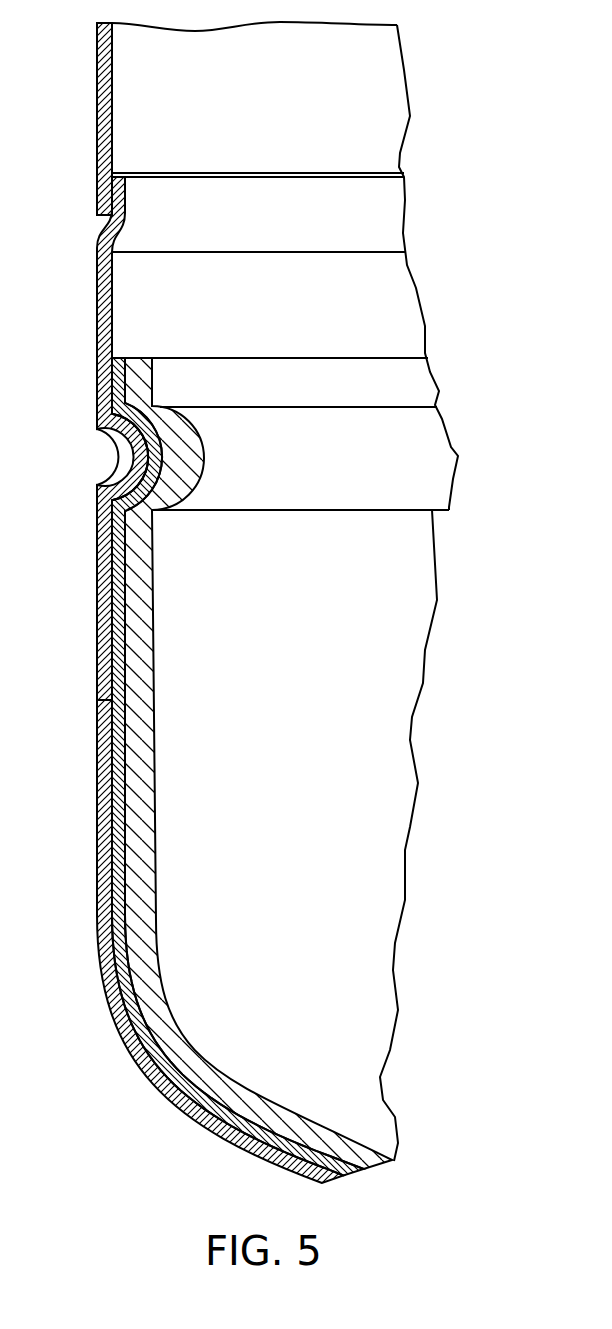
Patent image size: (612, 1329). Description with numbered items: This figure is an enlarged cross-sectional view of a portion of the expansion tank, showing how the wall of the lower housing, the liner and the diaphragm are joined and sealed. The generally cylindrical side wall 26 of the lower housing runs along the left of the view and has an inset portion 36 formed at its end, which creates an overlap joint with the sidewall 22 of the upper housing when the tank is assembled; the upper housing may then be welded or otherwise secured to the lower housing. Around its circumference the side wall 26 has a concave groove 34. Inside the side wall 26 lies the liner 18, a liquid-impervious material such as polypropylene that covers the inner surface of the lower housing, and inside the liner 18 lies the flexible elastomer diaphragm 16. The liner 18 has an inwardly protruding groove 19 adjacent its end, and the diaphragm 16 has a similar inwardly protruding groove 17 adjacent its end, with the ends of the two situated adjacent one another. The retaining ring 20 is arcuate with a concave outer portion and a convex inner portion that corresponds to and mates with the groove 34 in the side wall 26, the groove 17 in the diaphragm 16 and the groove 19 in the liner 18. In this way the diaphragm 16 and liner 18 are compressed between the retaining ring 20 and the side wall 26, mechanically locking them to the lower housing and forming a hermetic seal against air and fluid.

The diaphragm 16 is at (148, 816).
The groove 17 is at (112, 404).
The liner 18 is at (120, 872).
The groove 19 is at (145, 453).
The retaining ring 20 is at (440, 447).
The sidewall 22 is at (97, 97).
The side wall 26 is at (105, 888).
The concave groove 34 is at (133, 462).
The inset portion 36 is at (148, 222).